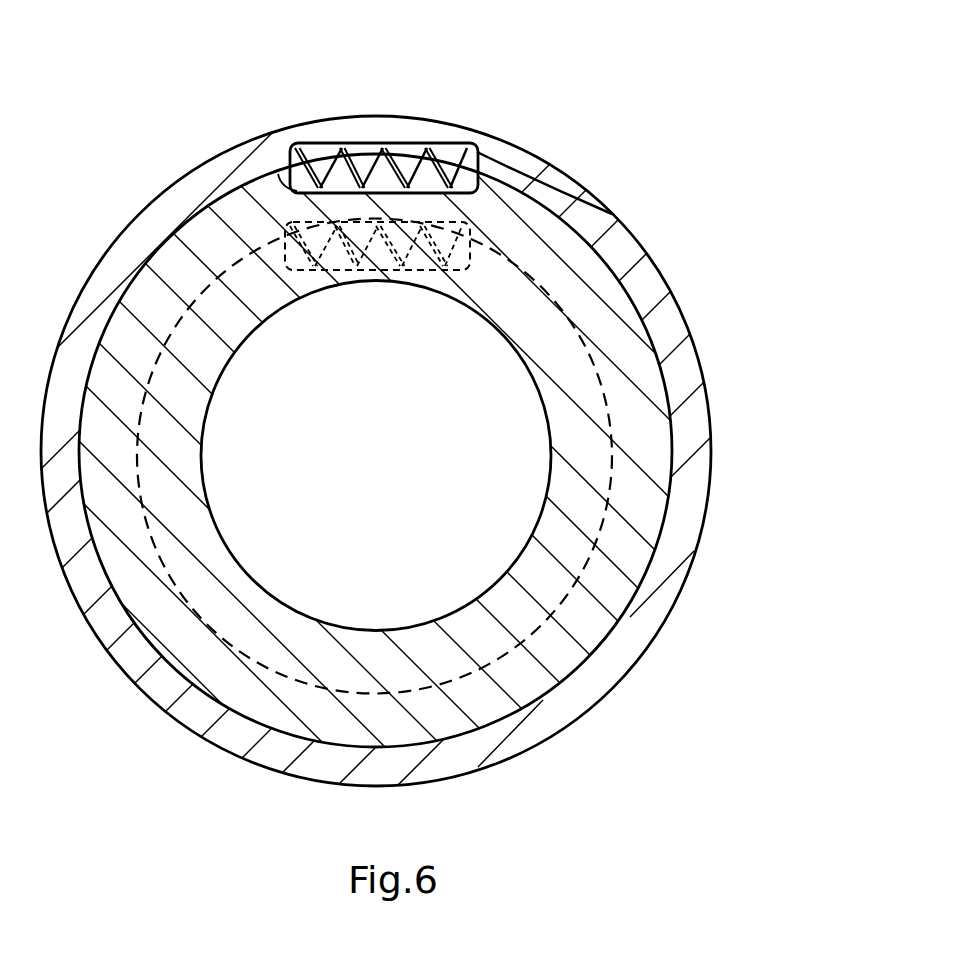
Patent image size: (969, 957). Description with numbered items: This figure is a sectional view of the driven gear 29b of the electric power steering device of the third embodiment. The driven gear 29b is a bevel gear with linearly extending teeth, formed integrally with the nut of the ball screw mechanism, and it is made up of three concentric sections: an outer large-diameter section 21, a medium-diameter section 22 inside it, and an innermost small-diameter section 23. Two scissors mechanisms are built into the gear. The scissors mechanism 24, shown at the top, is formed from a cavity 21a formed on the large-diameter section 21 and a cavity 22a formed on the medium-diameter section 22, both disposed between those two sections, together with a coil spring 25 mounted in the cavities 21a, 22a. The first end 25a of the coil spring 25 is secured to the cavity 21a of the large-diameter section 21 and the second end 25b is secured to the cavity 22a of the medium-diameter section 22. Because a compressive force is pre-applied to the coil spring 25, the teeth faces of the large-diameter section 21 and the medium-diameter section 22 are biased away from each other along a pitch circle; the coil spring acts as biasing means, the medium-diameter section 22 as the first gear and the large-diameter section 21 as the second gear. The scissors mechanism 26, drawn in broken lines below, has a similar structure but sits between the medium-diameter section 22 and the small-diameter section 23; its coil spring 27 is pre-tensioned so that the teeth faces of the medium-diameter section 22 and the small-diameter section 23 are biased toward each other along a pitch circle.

The large-diameter section 21 is at (690, 396).
The cavity 21a is at (482, 153).
The medium-diameter section 22 is at (650, 464).
The cavity 22a is at (265, 155).
The small-diameter section 23 is at (573, 527).
The scissors mechanism 24 is at (394, 140).
The coil spring 25 is at (446, 120).
The first end 25a is at (303, 143).
The second end 25b is at (483, 149).
The scissors mechanism 26 is at (312, 295).
The coil spring 27 is at (399, 268).
The driven gear 29b is at (425, 451).